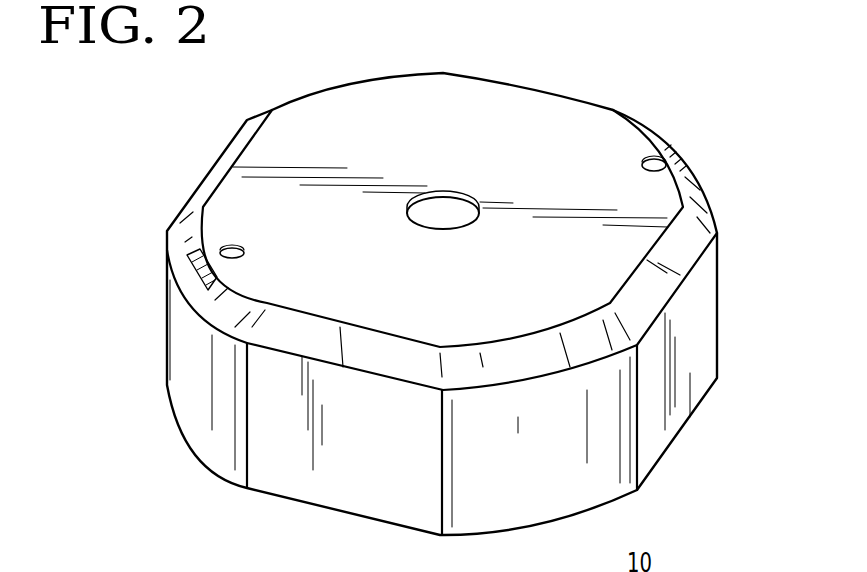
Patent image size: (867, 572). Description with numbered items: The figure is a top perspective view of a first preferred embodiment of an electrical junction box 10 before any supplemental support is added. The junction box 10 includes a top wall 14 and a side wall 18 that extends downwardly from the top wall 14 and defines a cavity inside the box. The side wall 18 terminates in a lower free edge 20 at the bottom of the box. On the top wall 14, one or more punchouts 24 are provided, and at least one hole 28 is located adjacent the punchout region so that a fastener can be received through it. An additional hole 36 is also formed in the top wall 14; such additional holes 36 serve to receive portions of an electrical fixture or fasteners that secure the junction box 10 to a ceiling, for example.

The junction box 10 is at (634, 56).
The top wall 14 is at (558, 172).
The side wall 18 is at (364, 448).
The lower free edge 20 is at (656, 466).
The punchouts 24 is at (215, 265).
The hole 28 is at (226, 250).
The additional holes 36 is at (442, 197).